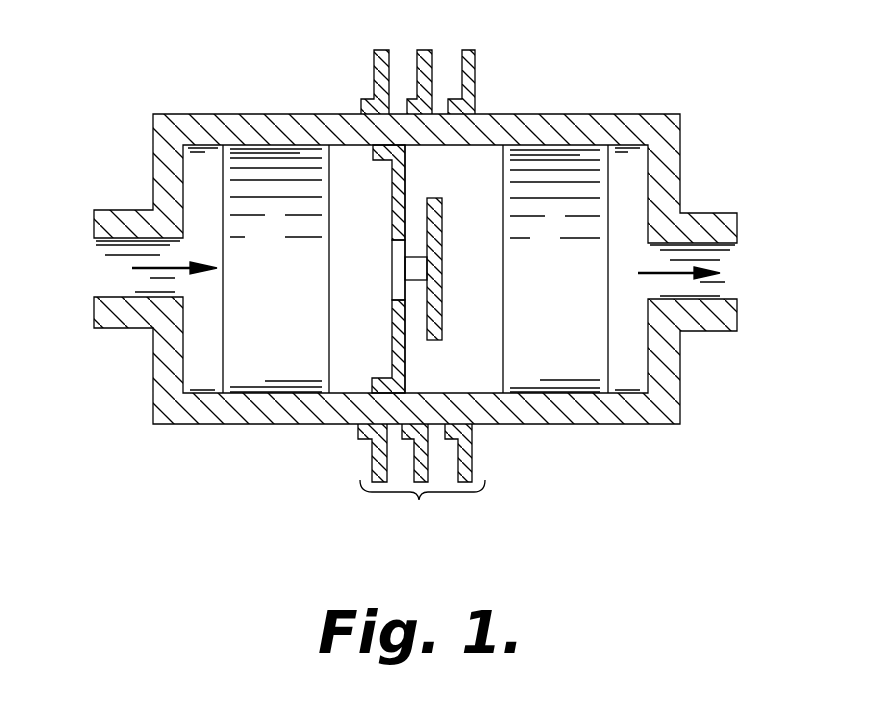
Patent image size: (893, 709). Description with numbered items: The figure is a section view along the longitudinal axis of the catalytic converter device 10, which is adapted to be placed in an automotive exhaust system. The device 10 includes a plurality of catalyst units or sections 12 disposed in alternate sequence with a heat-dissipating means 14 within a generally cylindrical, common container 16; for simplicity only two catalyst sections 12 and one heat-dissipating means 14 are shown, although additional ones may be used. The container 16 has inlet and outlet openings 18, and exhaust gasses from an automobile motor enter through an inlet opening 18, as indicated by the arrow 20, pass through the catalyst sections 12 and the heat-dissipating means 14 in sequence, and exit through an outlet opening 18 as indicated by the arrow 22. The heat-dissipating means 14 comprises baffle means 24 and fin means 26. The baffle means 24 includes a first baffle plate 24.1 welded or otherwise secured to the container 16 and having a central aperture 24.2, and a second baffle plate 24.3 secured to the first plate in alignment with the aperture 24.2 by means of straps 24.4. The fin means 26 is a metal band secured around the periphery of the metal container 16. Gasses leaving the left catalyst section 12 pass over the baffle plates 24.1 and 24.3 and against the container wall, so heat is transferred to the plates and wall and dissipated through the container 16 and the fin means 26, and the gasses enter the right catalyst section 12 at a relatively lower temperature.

The catalytic converter device 10 is at (700, 132).
The catalyst units or sections 12 is at (313, 369).
The heat-dissipating means 14 is at (421, 481).
The common container 16 is at (580, 426).
The inlet and outlet openings 18 is at (105, 283).
The arrow 20 is at (163, 266).
The arrow 22 is at (640, 273).
The baffle means 24 is at (397, 238).
The first baffle plate 24.1 is at (405, 178).
The central aperture 24.2 is at (394, 274).
The second baffle plate 24.3 is at (472, 243).
The straps 24.4 is at (426, 284).
The fin means 26 is at (466, 49).